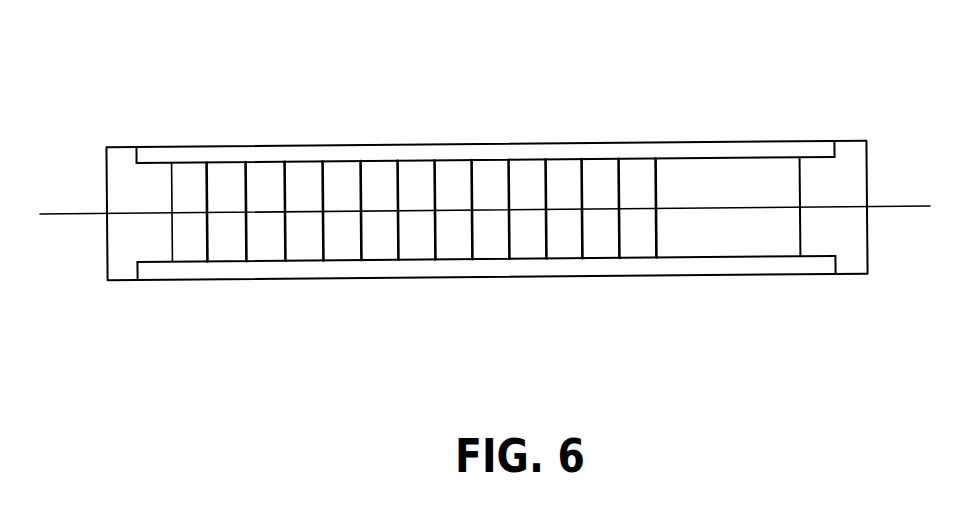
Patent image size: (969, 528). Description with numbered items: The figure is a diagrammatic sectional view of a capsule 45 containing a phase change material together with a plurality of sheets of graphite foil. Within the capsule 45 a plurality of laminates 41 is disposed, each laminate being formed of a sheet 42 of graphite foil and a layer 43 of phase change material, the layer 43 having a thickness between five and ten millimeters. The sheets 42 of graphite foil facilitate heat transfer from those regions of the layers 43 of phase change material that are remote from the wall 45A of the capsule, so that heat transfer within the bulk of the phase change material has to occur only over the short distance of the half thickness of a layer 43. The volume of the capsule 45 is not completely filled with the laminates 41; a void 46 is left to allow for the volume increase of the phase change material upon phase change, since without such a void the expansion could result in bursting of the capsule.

The laminate 41 is at (203, 283).
The sheet of graphite foil 42 is at (201, 184).
The layer of phase change material 43 is at (225, 197).
The capsule 45 is at (847, 60).
The wall of the capsule 45A is at (820, 151).
The void 46 is at (747, 231).